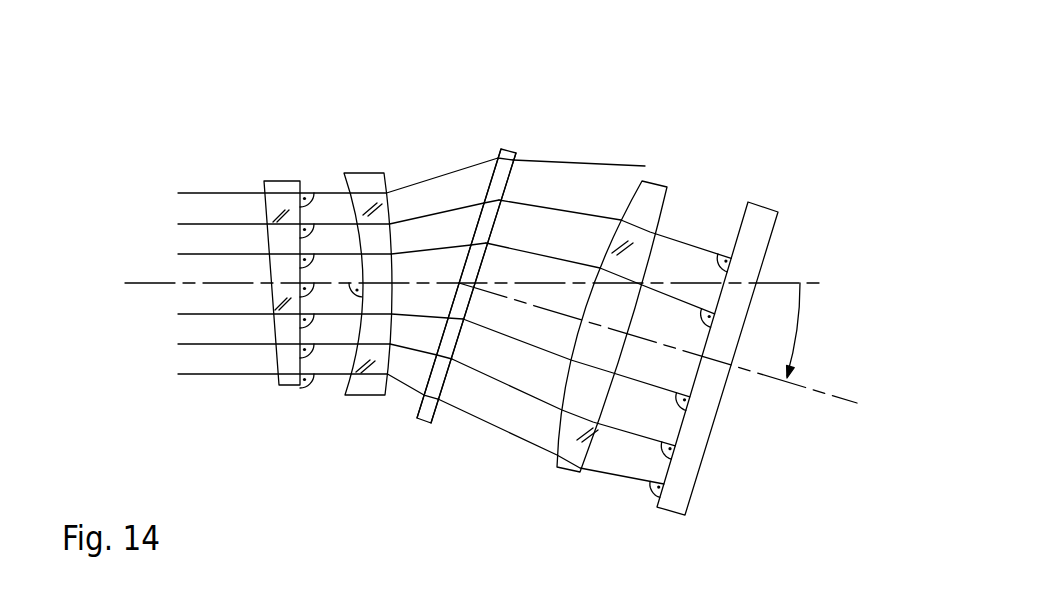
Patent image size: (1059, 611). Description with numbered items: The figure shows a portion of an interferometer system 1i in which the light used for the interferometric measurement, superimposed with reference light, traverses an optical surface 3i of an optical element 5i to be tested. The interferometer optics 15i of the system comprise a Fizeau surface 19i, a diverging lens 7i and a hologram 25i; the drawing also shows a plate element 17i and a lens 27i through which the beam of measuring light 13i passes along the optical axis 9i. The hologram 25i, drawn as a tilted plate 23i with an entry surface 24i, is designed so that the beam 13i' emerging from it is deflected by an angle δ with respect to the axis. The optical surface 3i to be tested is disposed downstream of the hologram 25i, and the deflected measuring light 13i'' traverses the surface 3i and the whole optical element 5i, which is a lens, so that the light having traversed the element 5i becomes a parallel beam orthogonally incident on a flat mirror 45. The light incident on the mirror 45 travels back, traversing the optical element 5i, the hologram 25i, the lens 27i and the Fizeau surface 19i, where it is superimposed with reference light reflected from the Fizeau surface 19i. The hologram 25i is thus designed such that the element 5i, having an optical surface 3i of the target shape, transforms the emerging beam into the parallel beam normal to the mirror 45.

The optical unit 1i is at (298, 97).
The interferometer optics 15i is at (530, 87).
The beam of measuring light 13i is at (285, 248).
The beam of measuring light 13i' is at (450, 252).
The deflected light beam 13i'' is at (584, 291).
The plate element 17i is at (283, 181).
The Fizeau surface 19i is at (300, 387).
The lens 27i is at (365, 172).
The deflecting element 23i is at (422, 427).
The entry surface of deflecting element 24i is at (418, 406).
The hologram 25i is at (435, 417).
The optical surface 3i is at (637, 190).
The optical element 5i is at (758, 200).
The flat mirror 45 is at (746, 210).
The optical axis 9i is at (147, 283).
The diverging lens 7i is at (842, 395).